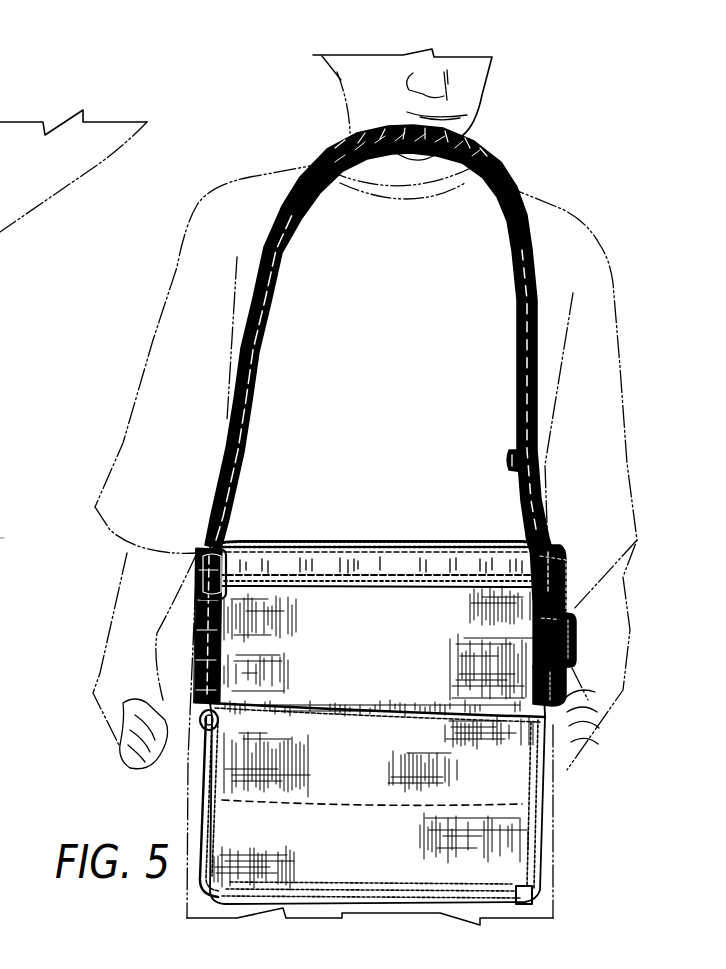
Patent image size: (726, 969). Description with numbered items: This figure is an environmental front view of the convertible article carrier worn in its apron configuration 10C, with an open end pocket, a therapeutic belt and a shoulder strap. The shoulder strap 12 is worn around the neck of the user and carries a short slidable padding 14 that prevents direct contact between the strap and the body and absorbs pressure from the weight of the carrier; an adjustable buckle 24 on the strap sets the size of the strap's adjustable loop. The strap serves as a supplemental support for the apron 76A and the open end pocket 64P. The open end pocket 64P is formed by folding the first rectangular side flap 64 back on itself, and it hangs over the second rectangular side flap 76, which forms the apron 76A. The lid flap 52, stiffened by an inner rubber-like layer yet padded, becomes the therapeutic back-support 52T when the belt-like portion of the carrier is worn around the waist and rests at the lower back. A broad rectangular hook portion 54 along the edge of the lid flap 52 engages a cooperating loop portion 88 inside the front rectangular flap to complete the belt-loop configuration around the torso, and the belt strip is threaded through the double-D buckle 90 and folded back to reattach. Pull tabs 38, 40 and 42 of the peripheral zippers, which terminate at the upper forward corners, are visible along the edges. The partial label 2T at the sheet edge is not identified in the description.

The apron configuration 10C is at (640, 452).
The shoulder strap 12 is at (517, 283).
The slidable padding 14 is at (480, 150).
The adjustable buckle 24 is at (515, 453).
The pull tab 38 is at (197, 578).
The pull tab 40 is at (560, 560).
The pull tab 42 is at (226, 722).
The lid flap 52 is at (440, 550).
The therapeutic back-support 52T is at (340, 525).
The hook portion 54 is at (570, 563).
The first rectangular side flap 64 is at (365, 661).
The open end pocket 64P is at (175, 676).
The second rectangular side flap 76 is at (408, 874).
The apron 76A is at (188, 816).
The loop portion 88 is at (577, 608).
The double-D buckle 90 is at (577, 660).
The flap edge (adjacent figure) 2T is at (11, 540).